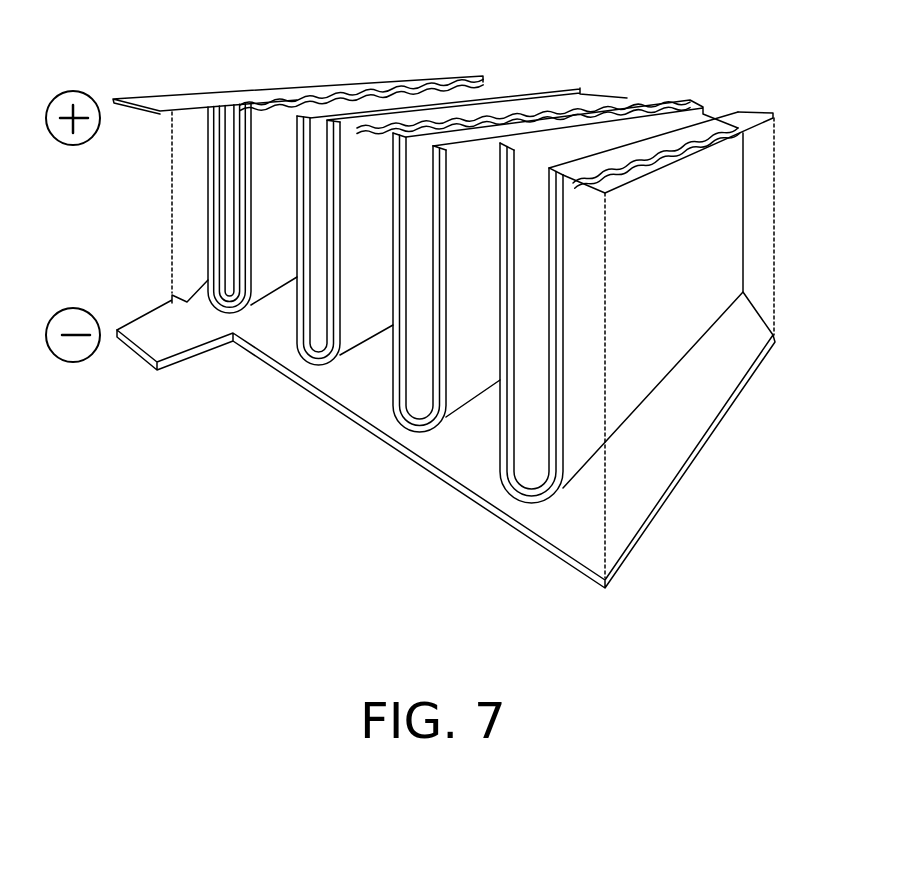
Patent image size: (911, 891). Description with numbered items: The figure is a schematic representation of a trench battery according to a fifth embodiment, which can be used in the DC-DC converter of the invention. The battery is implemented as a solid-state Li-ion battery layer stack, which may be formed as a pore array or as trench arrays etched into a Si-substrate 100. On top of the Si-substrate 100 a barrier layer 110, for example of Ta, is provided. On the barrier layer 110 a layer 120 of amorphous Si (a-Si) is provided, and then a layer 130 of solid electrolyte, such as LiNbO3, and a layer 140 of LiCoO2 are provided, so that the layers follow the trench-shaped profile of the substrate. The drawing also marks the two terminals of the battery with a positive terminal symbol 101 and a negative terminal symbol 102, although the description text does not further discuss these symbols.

The Si-substrate 100 is at (690, 441).
The positive terminal 101 is at (75, 91).
The negative terminal 102 is at (73, 362).
The barrier layer 110 is at (562, 344).
The layer of amorphous Si 120 is at (535, 500).
The layer of solid electrolyte 130 is at (415, 432).
The layer of LiCoO2 140 is at (310, 363).